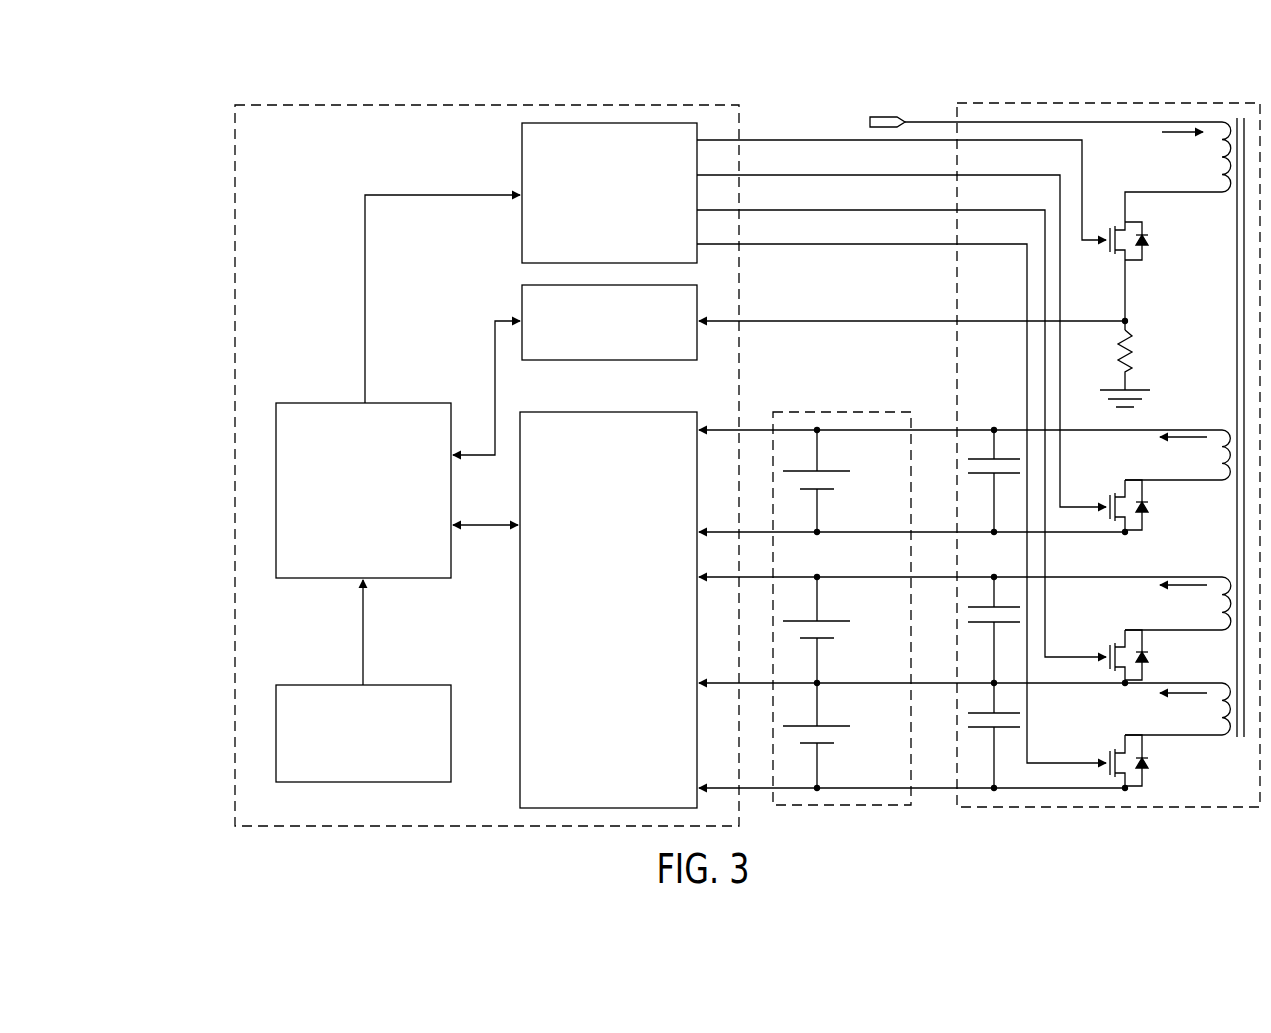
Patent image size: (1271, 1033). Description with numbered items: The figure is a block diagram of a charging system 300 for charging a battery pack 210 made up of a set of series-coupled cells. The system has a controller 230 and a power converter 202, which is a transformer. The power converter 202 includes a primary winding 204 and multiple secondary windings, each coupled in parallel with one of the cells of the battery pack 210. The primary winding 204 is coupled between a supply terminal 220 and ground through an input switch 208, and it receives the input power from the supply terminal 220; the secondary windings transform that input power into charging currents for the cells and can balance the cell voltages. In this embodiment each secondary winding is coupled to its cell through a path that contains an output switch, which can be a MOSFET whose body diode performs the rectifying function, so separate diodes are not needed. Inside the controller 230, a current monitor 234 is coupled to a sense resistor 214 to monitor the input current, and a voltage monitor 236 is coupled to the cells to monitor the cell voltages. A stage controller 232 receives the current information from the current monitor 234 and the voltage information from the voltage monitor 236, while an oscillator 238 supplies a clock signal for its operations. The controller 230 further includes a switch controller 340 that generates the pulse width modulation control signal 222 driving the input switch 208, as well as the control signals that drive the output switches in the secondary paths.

The charging system 300 is at (193, 95).
The controller 230 is at (724, 105).
The switch controller 340 is at (519, 160).
The current monitor 234 is at (519, 302).
The stage controller 232 is at (434, 403).
The oscillator 238 is at (409, 685).
The voltage monitor 236 is at (676, 412).
The control signal 222 is at (766, 140).
The supply terminal 220 is at (893, 119).
The power converter 202 is at (1198, 104).
The primary winding 204 is at (1226, 198).
The input switch 208 is at (1112, 234).
The sense resistor 214 is at (1136, 349).
The battery pack 210 is at (876, 412).